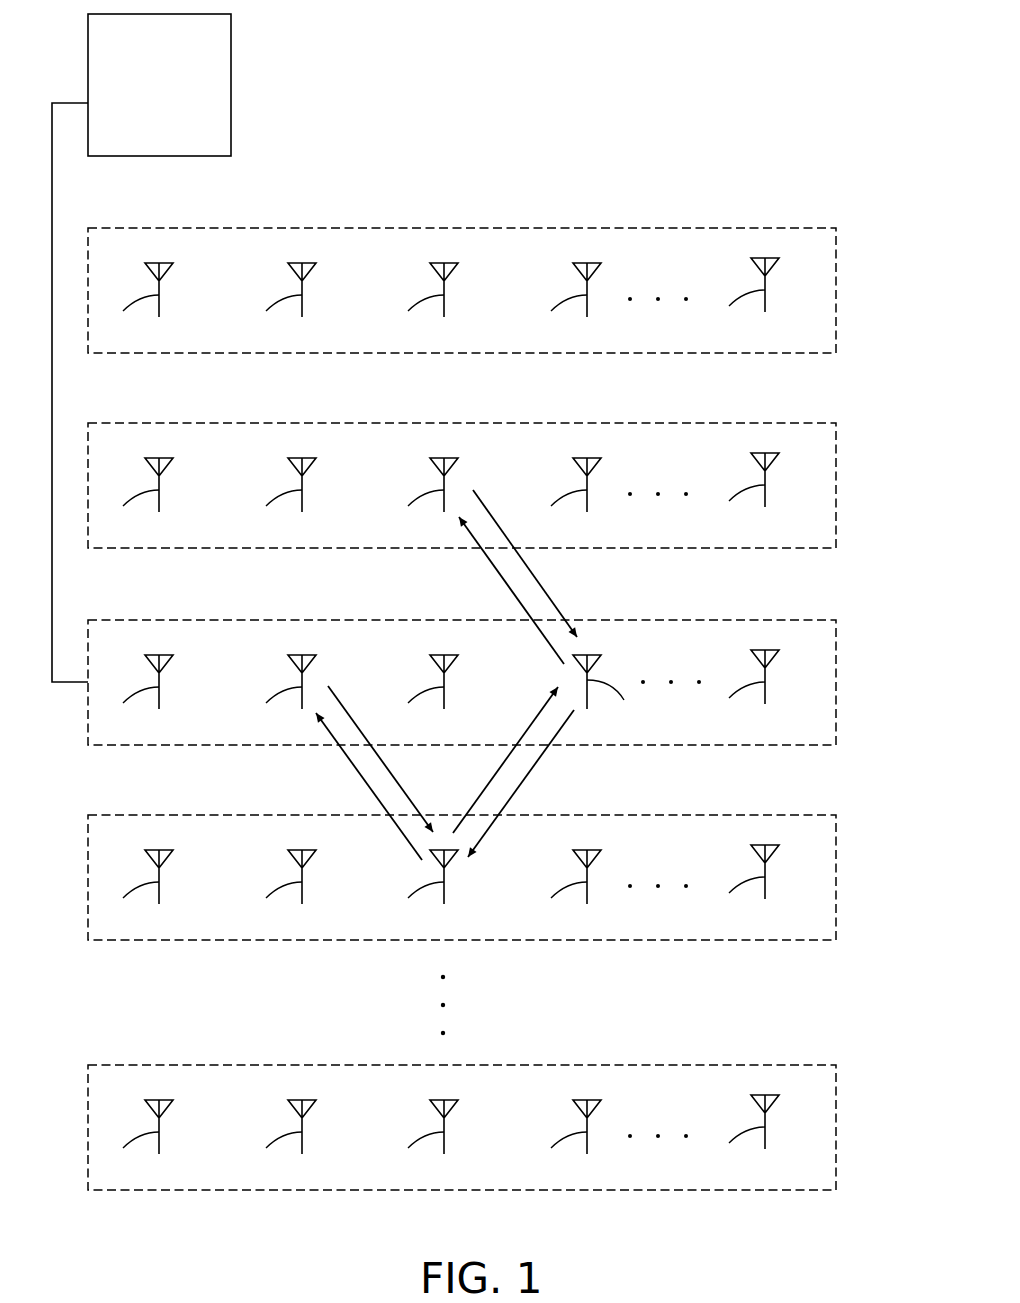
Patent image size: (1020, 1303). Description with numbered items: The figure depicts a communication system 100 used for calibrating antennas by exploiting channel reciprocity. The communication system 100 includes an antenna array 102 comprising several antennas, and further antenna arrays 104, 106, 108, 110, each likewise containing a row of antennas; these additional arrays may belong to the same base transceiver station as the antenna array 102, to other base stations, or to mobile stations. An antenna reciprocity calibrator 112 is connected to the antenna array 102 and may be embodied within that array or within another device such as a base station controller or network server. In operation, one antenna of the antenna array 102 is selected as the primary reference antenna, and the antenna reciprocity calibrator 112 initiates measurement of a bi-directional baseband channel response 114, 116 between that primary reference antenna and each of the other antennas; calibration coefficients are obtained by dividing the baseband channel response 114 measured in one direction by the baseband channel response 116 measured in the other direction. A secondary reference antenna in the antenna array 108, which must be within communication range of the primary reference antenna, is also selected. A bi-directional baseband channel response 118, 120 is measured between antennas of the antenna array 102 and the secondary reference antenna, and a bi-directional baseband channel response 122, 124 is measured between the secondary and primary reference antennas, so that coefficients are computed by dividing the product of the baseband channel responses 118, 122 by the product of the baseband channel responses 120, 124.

The communication system 100 is at (787, 5).
The antenna reciprocity calibrator 112 is at (141, 348).
The antenna array 102 is at (836, 655).
The antenna array 104 is at (836, 458).
The antenna array 106 is at (836, 263).
The antenna array 108 is at (836, 850).
The antenna array 110 is at (836, 1100).
The baseband channel response 114 is at (543, 587).
The baseband channel response 116 is at (501, 580).
The baseband channel response 118 is at (398, 787).
The baseband channel response 120 is at (358, 777).
The baseband channel response 122 is at (475, 800).
The baseband channel response 124 is at (528, 775).